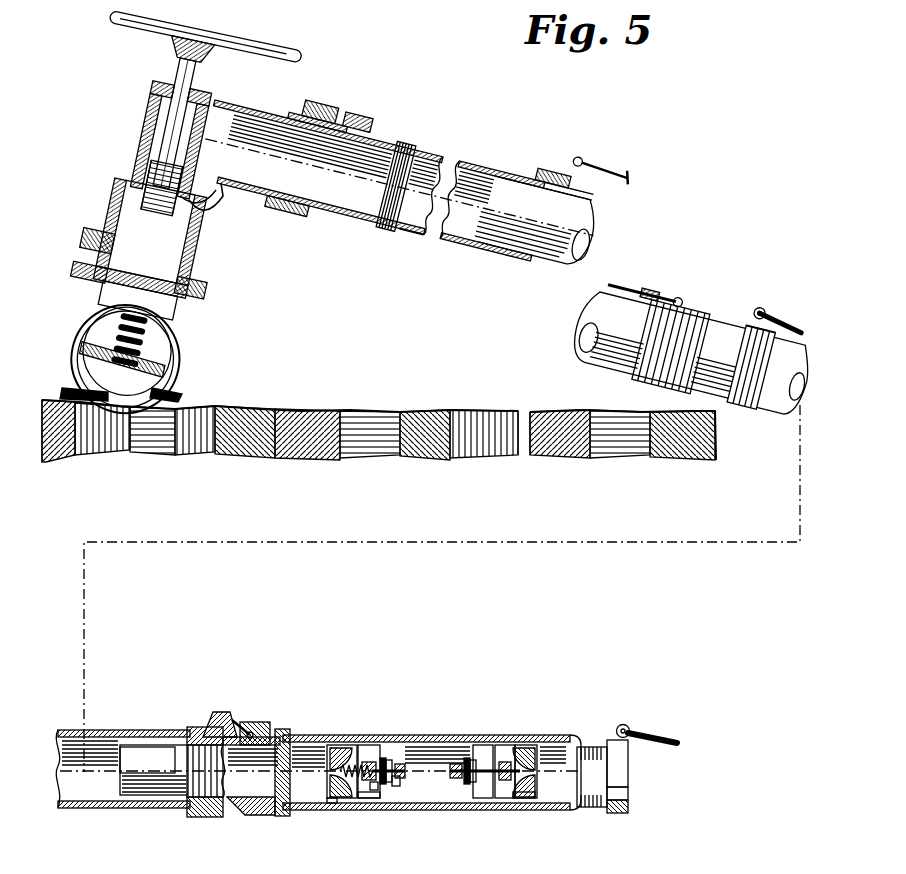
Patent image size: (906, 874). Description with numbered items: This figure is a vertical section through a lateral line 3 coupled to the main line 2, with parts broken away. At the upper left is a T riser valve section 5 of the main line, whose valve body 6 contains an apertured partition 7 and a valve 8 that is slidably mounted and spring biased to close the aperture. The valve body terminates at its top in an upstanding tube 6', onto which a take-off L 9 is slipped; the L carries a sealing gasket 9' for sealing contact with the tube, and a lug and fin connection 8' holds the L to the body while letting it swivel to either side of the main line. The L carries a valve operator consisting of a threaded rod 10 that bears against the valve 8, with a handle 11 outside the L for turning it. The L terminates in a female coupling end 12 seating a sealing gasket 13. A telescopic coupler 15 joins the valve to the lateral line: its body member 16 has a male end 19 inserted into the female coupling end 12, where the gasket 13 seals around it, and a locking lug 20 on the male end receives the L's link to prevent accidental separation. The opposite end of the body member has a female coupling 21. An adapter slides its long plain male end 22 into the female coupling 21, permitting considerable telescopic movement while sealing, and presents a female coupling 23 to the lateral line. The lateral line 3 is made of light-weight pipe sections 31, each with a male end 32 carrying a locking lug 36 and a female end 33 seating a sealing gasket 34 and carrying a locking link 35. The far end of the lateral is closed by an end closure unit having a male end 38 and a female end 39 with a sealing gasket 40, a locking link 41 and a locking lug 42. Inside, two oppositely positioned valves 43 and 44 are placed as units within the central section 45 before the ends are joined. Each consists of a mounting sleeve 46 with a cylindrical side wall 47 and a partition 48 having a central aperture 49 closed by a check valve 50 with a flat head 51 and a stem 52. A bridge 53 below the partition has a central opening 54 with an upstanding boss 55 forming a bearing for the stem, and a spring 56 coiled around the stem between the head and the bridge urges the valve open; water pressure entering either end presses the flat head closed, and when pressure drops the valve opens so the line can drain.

The main line 2 is at (148, 381).
The lateral line 3 is at (787, 413).
The T riser valve section 5 is at (206, 325).
The valve body 6 is at (139, 359).
The upstanding tube 6' is at (207, 276).
The apertured partition 7 is at (100, 248).
The valve 8 is at (81, 284).
The lug and fin connection 8' is at (128, 188).
The take-off L 9 is at (212, 202).
The sealing gasket 9' is at (169, 232).
The threaded rod 10 is at (165, 114).
The handle 11 is at (268, 52).
The female coupling end 12 is at (306, 100).
The sealing gasket 13 is at (303, 112).
The telescopic coupler 15 is at (494, 153).
The body member 16 is at (438, 240).
The male end 19 is at (398, 144).
The locking lug 20 is at (352, 124).
The female coupling 21 is at (526, 170).
The male end 22 is at (590, 214).
The female coupling 23 is at (710, 308).
The pipe section 31 is at (764, 396).
The male end 32 is at (762, 314).
The female end 33 is at (184, 726).
The sealing gasket 34 is at (192, 816).
The locking link 35 is at (240, 720).
The locking lug 36 is at (790, 320).
The male end 38 is at (146, 782).
The female end 39 is at (614, 740).
The sealing gasket 40 is at (619, 814).
The locking link 41 is at (660, 736).
The locking lug 42 is at (264, 728).
The valve 43 is at (378, 746).
The valve 44 is at (521, 744).
The central section 45 is at (456, 740).
The mounting sleeve 46 is at (340, 742).
The cylindrical side wall 47 is at (404, 742).
The partition 48 is at (342, 808).
The central aperture 49 is at (366, 804).
The check valve 50 is at (332, 770).
The head 51 is at (332, 790).
The stem 52 is at (398, 762).
The bridge 53 is at (474, 760).
The central opening 54 is at (376, 804).
The upstanding boss 55 is at (400, 784).
The spring 56 is at (330, 806).